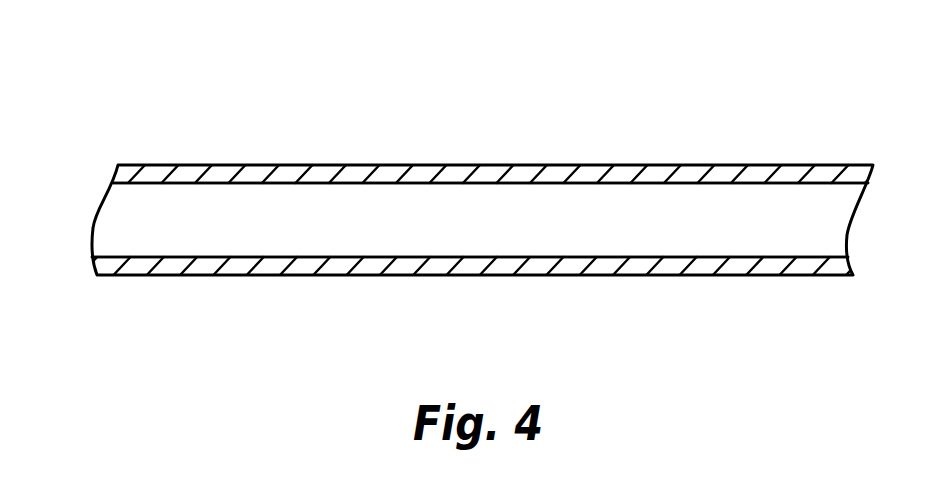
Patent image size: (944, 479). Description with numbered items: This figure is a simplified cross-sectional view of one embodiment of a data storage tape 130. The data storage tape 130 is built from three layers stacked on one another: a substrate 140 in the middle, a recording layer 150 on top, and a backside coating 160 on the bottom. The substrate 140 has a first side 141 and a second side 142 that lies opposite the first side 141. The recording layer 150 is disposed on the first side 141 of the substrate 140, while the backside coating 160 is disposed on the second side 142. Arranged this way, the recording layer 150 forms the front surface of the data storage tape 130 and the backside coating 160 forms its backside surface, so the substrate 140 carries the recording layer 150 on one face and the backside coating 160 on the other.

The data storage tape 130 is at (805, 67).
The substrate 140 is at (106, 224).
The first side 141 is at (402, 177).
The second side 142 is at (440, 260).
The recording layer 150 is at (237, 175).
The backside coating 160 is at (272, 265).